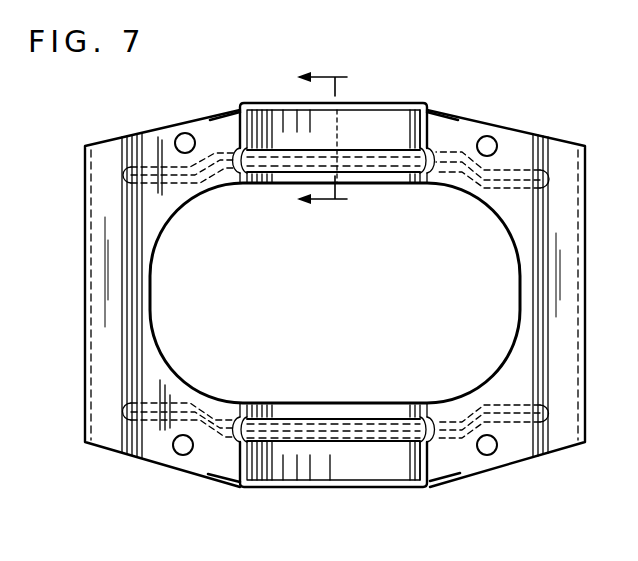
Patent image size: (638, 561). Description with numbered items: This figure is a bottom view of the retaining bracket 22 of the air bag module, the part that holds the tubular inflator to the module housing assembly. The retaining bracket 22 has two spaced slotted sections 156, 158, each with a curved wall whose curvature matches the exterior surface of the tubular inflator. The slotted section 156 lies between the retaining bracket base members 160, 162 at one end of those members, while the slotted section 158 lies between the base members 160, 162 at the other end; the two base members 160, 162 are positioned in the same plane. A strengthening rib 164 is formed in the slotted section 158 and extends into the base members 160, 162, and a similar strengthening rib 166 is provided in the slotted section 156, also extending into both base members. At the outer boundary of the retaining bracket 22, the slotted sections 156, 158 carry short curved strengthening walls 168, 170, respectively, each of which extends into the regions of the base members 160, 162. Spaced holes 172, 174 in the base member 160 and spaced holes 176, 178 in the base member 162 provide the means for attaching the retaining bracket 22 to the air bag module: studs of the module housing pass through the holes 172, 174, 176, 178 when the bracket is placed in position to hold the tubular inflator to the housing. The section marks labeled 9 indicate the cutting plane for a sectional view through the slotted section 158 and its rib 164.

The retaining bracket 22 is at (500, 78).
The slotted section 156 is at (346, 458).
The slotted section 158 is at (418, 105).
The retaining bracket base member 160 is at (162, 440).
The retaining bracket base member 162 is at (455, 448).
The strengthening rib 164 is at (368, 142).
The strengthening rib 166 is at (259, 442).
The short curved strengthening wall 168 is at (397, 488).
The short curved strengthening wall 170 is at (383, 101).
The hole 172 is at (186, 133).
The hole 174 is at (182, 455).
The hole 176 is at (496, 137).
The hole 178 is at (491, 451).
The section line 9- 9 is at (325, 144).